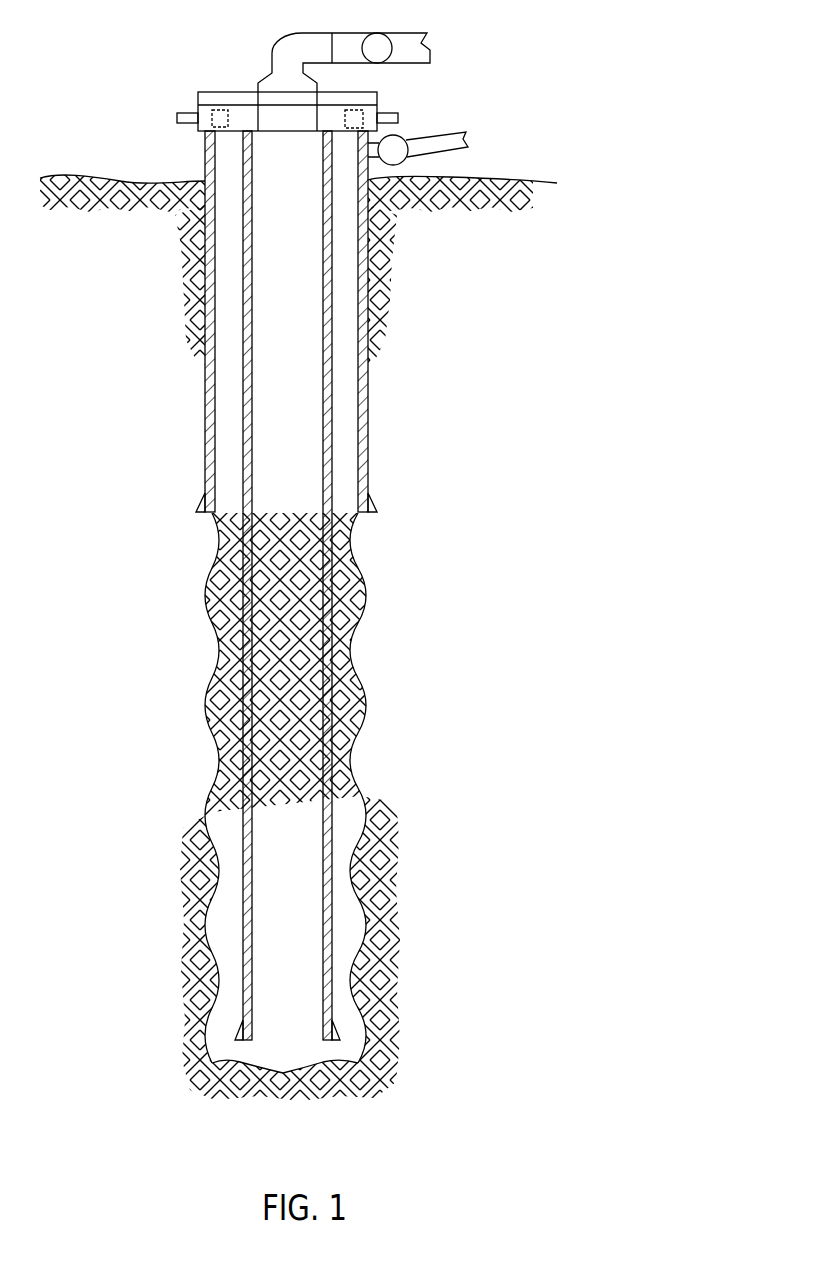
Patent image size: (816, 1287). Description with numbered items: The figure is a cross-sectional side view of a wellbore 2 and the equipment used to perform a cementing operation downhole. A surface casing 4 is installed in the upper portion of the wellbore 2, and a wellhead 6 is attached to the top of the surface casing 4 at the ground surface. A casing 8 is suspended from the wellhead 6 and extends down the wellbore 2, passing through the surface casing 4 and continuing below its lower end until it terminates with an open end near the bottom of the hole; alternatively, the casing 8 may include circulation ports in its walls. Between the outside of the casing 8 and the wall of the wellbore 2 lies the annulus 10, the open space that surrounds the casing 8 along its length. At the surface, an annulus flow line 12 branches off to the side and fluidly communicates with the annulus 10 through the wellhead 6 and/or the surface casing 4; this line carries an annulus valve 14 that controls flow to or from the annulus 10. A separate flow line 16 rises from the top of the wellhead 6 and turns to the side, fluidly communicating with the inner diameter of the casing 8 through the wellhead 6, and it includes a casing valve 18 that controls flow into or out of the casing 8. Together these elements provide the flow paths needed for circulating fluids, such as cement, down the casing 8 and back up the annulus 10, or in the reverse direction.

The wellbore 2 is at (367, 577).
The surface casing 4 is at (368, 423).
The wellhead 6 is at (198, 107).
The casing 8 is at (330, 767).
The annulus 10 is at (345, 518).
The annulus flow line 12 is at (460, 150).
The annulus valve 14 is at (407, 137).
The flow line 16 is at (420, 43).
The casing valve 18 is at (380, 50).